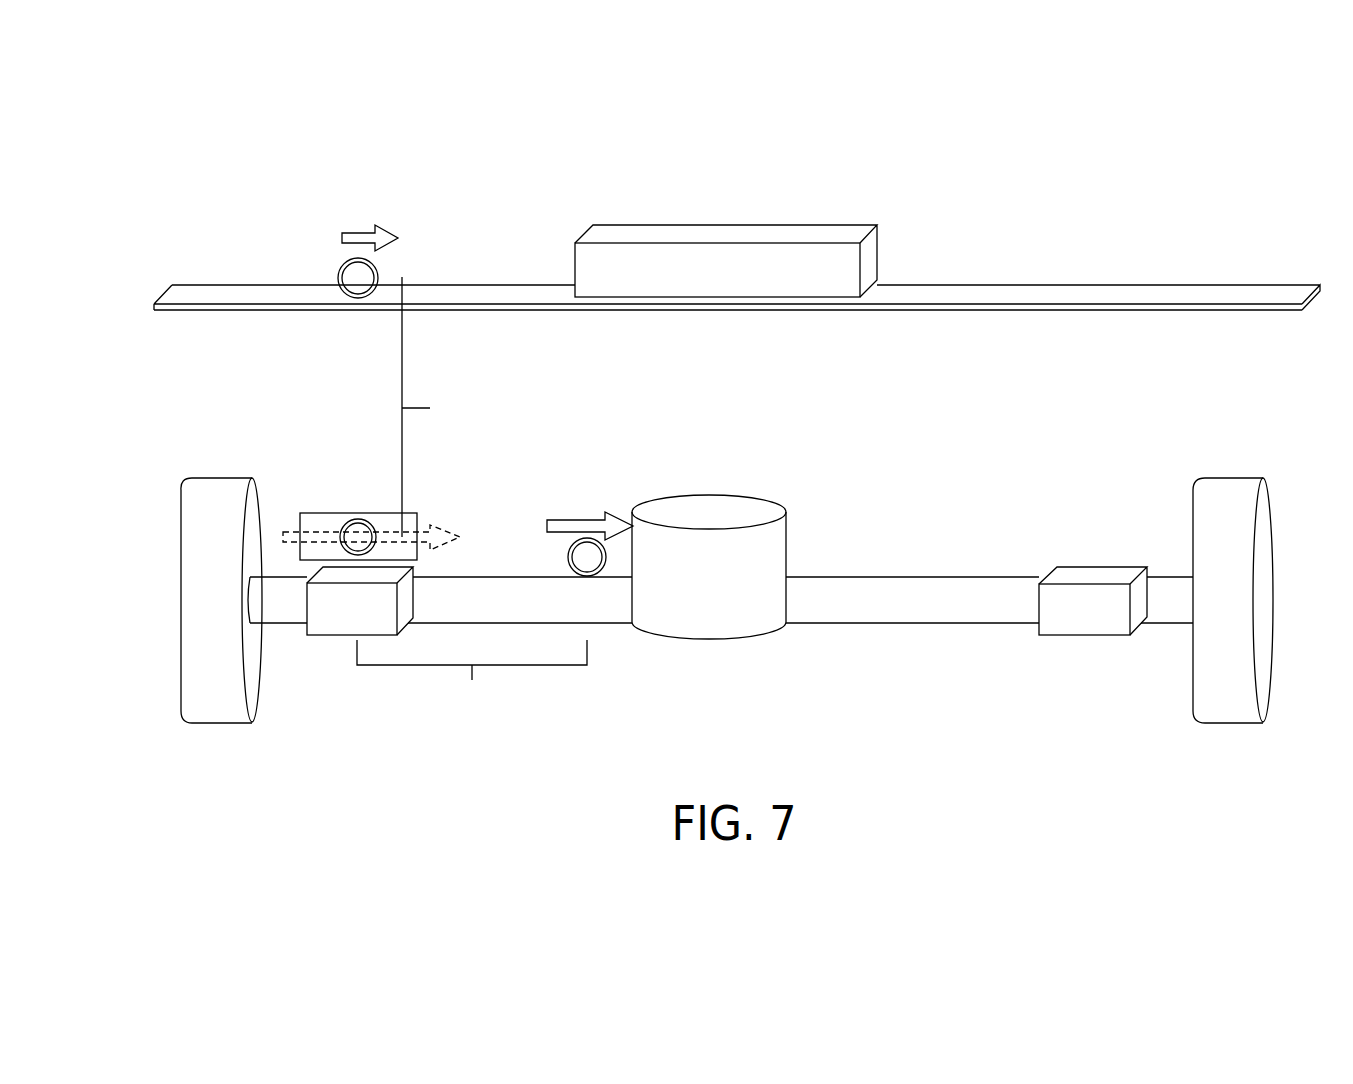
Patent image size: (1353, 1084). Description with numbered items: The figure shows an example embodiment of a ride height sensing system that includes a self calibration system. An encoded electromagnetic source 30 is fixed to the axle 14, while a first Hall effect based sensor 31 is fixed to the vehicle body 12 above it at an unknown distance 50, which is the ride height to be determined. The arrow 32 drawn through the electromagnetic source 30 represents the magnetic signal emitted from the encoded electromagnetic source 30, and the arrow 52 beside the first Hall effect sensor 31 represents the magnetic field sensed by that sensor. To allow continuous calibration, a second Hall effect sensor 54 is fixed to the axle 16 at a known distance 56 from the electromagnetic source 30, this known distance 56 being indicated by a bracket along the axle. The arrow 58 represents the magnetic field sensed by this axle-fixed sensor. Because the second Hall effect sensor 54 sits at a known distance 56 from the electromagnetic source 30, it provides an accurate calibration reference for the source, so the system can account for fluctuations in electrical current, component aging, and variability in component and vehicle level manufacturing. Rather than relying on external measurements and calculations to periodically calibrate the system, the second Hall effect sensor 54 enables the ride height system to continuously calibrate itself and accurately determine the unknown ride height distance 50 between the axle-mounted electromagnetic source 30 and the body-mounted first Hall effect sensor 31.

The vehicle body 12 is at (1184, 285).
The axle 14 is at (938, 623).
The axle 16 is at (180, 637).
The encoded electromagnetic source 30 is at (356, 513).
The first Hall effect based sensor 31 is at (338, 276).
The arrow representing the magnetic signal 32 is at (293, 531).
The unknown distance 50 is at (468, 411).
The arrow representing the magnetic field sensed by the first Hall effect sensor 52 is at (357, 233).
The second Hall effect sensor 54 is at (568, 557).
The known distance 56 is at (473, 718).
The arrow representing the magnetic field sensed by the fixed sensor 58 is at (575, 520).